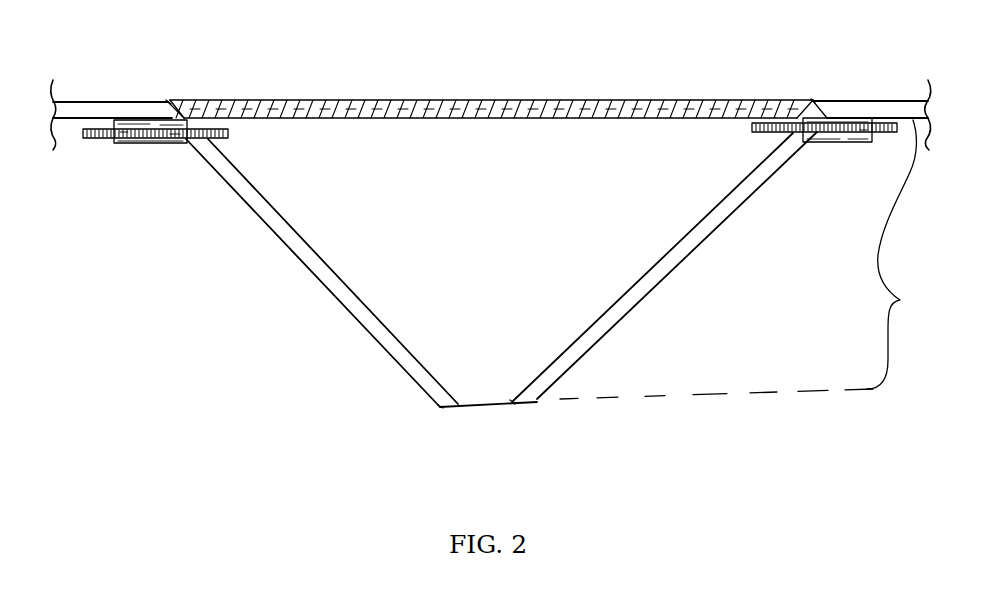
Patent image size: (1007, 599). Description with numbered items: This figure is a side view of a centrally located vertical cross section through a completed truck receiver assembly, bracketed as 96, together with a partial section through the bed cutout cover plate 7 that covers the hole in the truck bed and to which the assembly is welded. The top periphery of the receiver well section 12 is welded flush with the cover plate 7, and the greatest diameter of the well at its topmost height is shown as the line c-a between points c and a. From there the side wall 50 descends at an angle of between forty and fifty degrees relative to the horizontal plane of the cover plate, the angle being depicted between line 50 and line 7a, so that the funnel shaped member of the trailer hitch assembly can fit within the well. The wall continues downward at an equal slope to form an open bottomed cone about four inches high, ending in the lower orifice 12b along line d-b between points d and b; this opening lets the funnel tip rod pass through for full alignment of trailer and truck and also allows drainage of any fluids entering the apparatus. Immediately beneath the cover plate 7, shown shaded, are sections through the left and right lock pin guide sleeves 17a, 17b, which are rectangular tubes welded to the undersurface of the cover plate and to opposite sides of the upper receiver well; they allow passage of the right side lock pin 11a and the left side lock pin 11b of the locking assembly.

The bed cutout cover plate 7 is at (126, 100).
The cover plate plane line 7a is at (498, 100).
The receiver well diameter endpoint a is at (819, 91).
The receiver well diameter endpoint c is at (171, 97).
The lower orifice endpoint b is at (503, 406).
The lower orifice endpoint d is at (456, 408).
The right side lock pin 11a is at (222, 139).
The left side lock pin 11b is at (759, 134).
The left side lock pin guide sleeve 17a is at (164, 140).
The right side lock pin guide sleeve 17b is at (863, 141).
The receiver well section 12 is at (501, 297).
The lower orifice 12b is at (485, 409).
The side wall 50 is at (268, 228).
The truck receiver assembly 96 is at (745, 259).